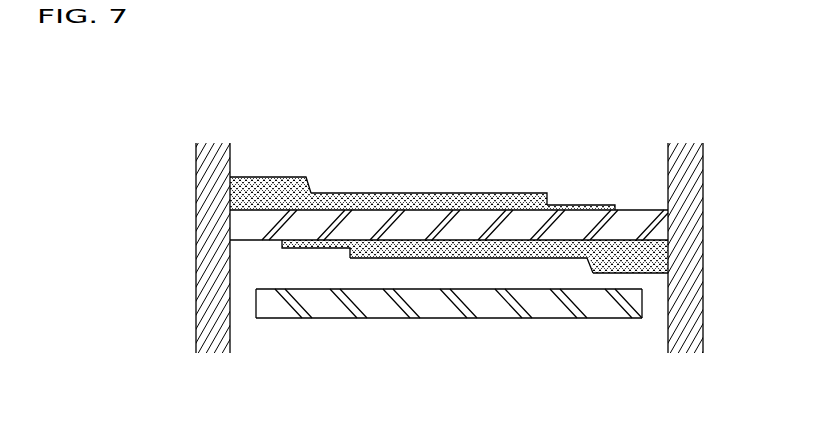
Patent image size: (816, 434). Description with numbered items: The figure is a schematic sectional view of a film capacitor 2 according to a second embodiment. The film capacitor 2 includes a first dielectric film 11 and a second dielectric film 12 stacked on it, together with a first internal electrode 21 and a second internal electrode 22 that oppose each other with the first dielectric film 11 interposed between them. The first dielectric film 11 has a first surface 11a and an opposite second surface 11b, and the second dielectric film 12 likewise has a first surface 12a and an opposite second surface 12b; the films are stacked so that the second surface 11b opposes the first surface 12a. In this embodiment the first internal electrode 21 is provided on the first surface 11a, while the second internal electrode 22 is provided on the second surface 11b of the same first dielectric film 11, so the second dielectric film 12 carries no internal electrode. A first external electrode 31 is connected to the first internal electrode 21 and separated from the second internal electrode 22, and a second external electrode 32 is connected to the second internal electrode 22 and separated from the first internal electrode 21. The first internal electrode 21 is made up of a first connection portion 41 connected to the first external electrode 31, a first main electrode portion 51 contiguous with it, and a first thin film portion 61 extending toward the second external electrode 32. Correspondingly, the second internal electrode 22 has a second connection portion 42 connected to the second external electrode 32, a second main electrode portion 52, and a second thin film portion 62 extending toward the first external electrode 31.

The film capacitor 2 is at (717, 117).
The first dielectric film 11 is at (250, 230).
The first surface 11a is at (241, 212).
The second surface 11b is at (255, 243).
The second dielectric film 12 is at (635, 308).
The first surface 12a is at (633, 297).
The second surface 12b is at (633, 320).
The first internal electrode 21 is at (568, 96).
The second internal electrode 22 is at (612, 385).
The first external electrode 31 is at (207, 175).
The second external electrode 32 is at (690, 175).
The first connection portion 41 is at (265, 177).
The second connection portion 42 is at (621, 265).
The first main electrode portion 51 is at (407, 193).
The second main electrode portion 52 is at (478, 258).
The first thin film portion 61 is at (585, 205).
The second thin film portion 62 is at (298, 246).